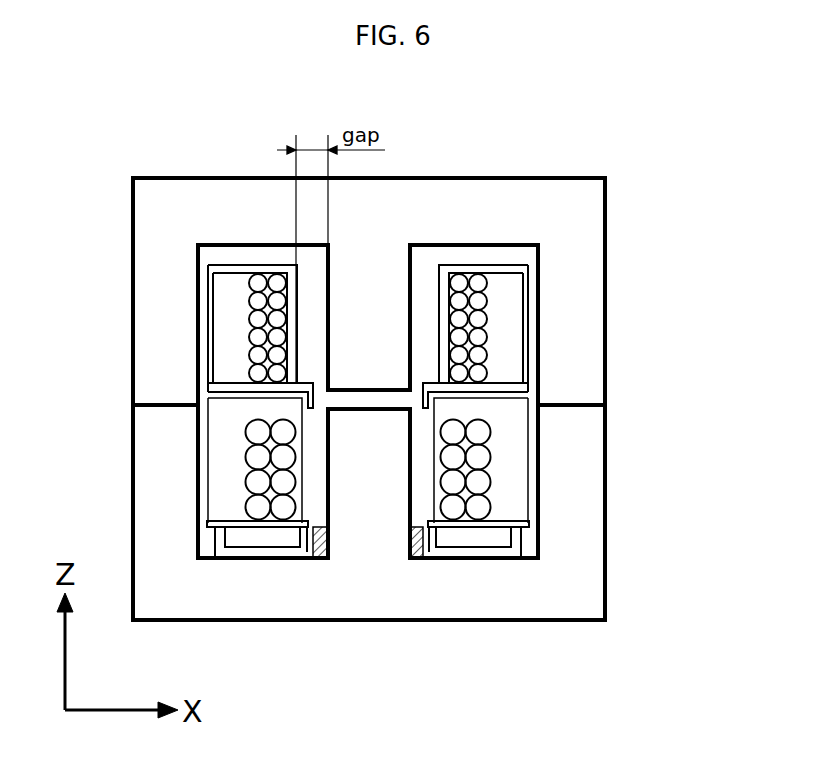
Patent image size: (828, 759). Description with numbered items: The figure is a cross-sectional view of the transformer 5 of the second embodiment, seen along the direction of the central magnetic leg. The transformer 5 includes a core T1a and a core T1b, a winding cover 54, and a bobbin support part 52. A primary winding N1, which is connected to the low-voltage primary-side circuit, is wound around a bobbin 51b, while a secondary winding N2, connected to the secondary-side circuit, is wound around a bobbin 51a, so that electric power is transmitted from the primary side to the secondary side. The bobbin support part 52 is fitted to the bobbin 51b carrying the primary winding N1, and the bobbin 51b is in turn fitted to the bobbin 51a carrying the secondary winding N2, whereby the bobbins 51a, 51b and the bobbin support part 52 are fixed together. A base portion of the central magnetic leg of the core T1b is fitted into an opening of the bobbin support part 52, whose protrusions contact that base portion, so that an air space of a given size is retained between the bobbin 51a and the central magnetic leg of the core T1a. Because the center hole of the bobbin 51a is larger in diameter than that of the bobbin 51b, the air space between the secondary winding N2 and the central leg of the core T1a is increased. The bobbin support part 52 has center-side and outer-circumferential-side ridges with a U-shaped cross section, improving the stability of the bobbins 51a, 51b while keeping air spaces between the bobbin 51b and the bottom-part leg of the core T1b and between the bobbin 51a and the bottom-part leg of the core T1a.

The transformer 5 is at (139, 155).
The core T1a is at (577, 213).
The core T1b is at (570, 592).
The bobbin 51a is at (478, 265).
The bobbin 51b is at (243, 530).
The bobbin support part 52 is at (413, 560).
The winding cover 54 is at (207, 325).
The primary winding N1 is at (493, 508).
The secondary winding N2 is at (490, 337).